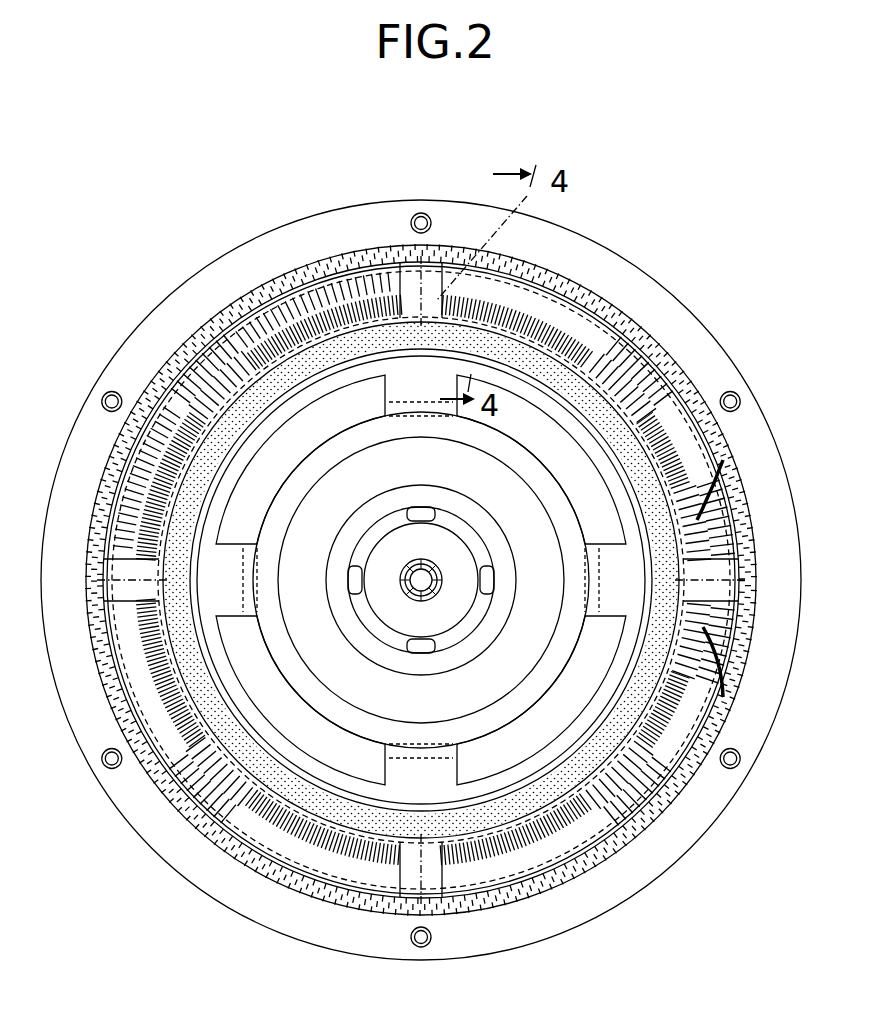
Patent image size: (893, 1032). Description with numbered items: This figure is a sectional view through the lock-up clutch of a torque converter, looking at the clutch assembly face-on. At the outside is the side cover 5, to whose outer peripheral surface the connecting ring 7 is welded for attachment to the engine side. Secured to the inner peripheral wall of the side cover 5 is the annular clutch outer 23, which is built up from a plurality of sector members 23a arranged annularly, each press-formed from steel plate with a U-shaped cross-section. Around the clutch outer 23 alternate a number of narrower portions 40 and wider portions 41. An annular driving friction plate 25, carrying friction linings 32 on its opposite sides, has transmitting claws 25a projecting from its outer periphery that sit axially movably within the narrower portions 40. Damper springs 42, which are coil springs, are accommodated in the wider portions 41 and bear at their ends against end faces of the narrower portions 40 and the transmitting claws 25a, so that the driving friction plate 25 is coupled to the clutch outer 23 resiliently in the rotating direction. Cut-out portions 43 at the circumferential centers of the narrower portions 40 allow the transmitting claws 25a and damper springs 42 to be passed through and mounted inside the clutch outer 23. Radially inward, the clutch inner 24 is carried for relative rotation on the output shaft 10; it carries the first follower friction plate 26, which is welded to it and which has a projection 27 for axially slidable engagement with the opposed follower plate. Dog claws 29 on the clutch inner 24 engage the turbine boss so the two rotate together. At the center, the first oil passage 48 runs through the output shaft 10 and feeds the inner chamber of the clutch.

The side cover 5 is at (598, 278).
The connecting ring 7 is at (236, 276).
The output shaft 10 is at (432, 572).
The clutch outer 23 is at (618, 318).
The sector member 23a is at (540, 300).
The clutch inner 24 is at (392, 520).
The driving friction plate 25 is at (300, 387).
The transmitting claw 25a is at (408, 296).
The first follower friction plate 26 is at (445, 265).
The projection 27 is at (592, 545).
The dog claw 29 is at (421, 512).
The friction lining 32 is at (230, 420).
The narrower portion 40 is at (420, 272).
The wider portion 41 is at (227, 327).
The damper spring 42 is at (207, 340).
The cut-out portion 43 is at (190, 367).
The first oil passage 48 is at (433, 585).